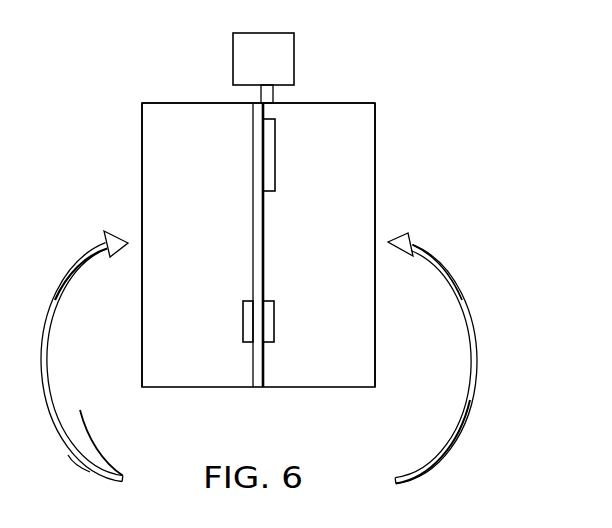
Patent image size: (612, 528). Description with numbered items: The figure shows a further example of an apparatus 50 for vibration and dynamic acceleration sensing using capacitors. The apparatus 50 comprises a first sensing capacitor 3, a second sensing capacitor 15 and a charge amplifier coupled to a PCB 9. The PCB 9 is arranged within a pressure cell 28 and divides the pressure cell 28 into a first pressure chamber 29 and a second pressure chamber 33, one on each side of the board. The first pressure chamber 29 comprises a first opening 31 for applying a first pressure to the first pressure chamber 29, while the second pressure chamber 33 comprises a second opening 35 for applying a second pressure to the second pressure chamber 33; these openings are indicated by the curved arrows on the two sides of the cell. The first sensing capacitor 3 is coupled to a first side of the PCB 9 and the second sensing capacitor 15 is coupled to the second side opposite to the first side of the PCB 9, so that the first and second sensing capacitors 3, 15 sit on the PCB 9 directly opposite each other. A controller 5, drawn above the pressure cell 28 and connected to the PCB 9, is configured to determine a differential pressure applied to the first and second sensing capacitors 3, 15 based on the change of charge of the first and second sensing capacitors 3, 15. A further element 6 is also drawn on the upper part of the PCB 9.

The apparatus 50 is at (133, 66).
The controller 5 is at (233, 58).
The pressure cell 28 is at (333, 103).
The first pressure chamber 29 is at (147, 143).
The second pressure chamber 33 is at (375, 186).
The second opening 35 is at (376, 240).
The first opening 31 is at (140, 257).
The upper paddle 6 is at (275, 152).
The first sensing capacitor 3 is at (243, 320).
The second sensing capacitor 15 is at (274, 320).
The PCB 9 is at (259, 387).